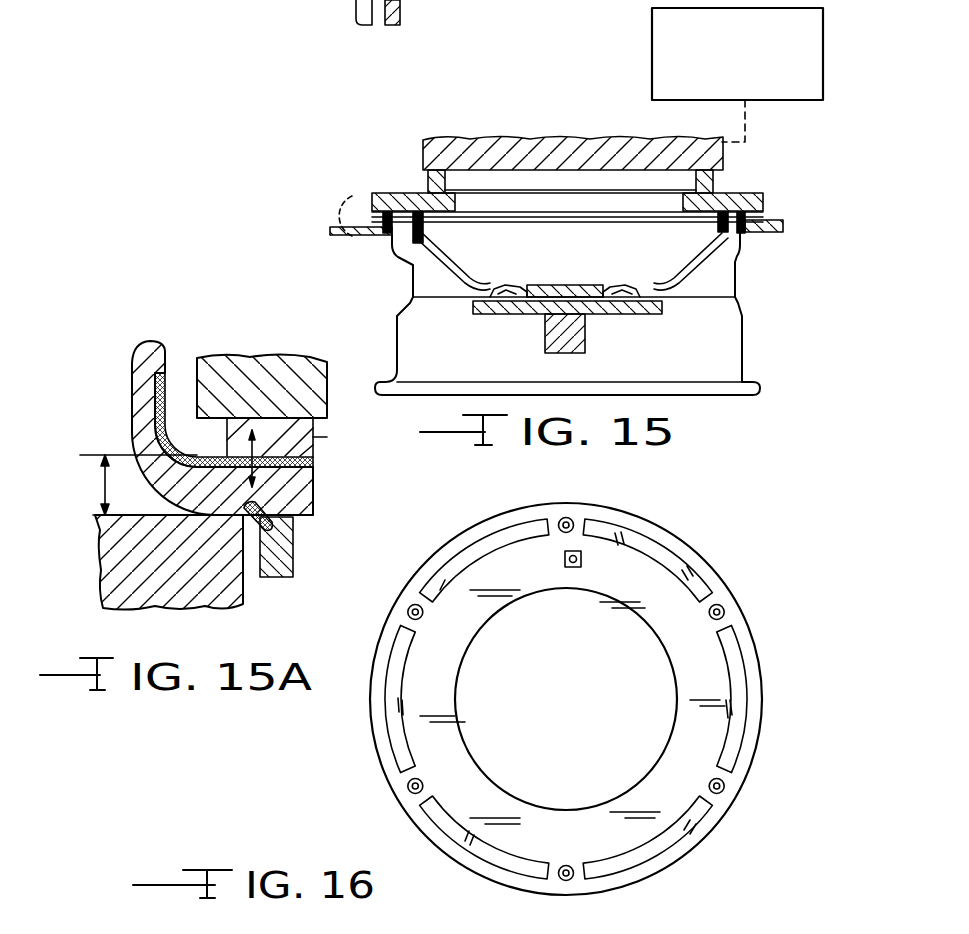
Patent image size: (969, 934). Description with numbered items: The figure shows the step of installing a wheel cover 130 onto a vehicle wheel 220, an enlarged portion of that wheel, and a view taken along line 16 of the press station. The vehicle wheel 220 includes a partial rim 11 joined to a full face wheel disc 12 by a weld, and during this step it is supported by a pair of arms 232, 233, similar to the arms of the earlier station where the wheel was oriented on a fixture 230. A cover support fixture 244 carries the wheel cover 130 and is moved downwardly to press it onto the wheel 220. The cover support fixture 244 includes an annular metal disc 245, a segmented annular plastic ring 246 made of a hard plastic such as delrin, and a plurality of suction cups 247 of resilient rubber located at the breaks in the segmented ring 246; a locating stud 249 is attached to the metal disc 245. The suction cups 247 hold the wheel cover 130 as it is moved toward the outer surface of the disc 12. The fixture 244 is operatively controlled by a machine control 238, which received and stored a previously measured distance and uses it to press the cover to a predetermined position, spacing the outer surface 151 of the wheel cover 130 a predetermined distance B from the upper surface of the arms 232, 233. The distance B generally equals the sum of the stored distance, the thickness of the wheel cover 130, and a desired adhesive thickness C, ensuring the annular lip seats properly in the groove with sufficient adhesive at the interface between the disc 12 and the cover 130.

In FIG. 15A, the partial rim 11 is at (293, 548).
In FIG. 15A, the full face wheel disc 12 is at (127, 384).
In FIG. 15, the section line 16— 16 is at (416, 52).
In FIG. 15A, the wheel cover 130 is at (173, 383).
In FIG. 15A, the outer surface of the wheel cover 151 is at (327, 437).
In FIG. 15, the vehicle wheel 220 is at (746, 316).
In FIG. 15, the fixture 230 is at (587, 332).
In FIG. 15, the arm 232 is at (783, 232).
In FIG. 15, the arm 233 is at (340, 236).
In FIG. 15A, the arm 233 is at (243, 596).
In FIG. 15, the machine control 238 is at (652, 50).
In FIG. 15, the cover support fixture 244 is at (583, 136).
In FIG. 15, the annular metal disc 245 is at (763, 198).
In FIG. 15A, the annular metal disc 245 is at (228, 360).
In FIG. 16, the annular metal disc 245 is at (763, 690).
In FIG. 15, the segmented annular plastic ring 246 is at (428, 230).
In FIG. 15A, the segmented annular plastic ring 246 is at (313, 455).
In FIG. 16, the segmented annular plastic ring 246 is at (486, 532).
In FIG. 16, the suction cups 247 is at (567, 518).
In FIG. 15, the locating stud 249 is at (455, 250).
In FIG. 16, the locating stud 249 is at (581, 562).
In FIG. 15A, the predetermined distance B is at (103, 483).
In FIG. 15A, the adhesive thickness C is at (313, 506).